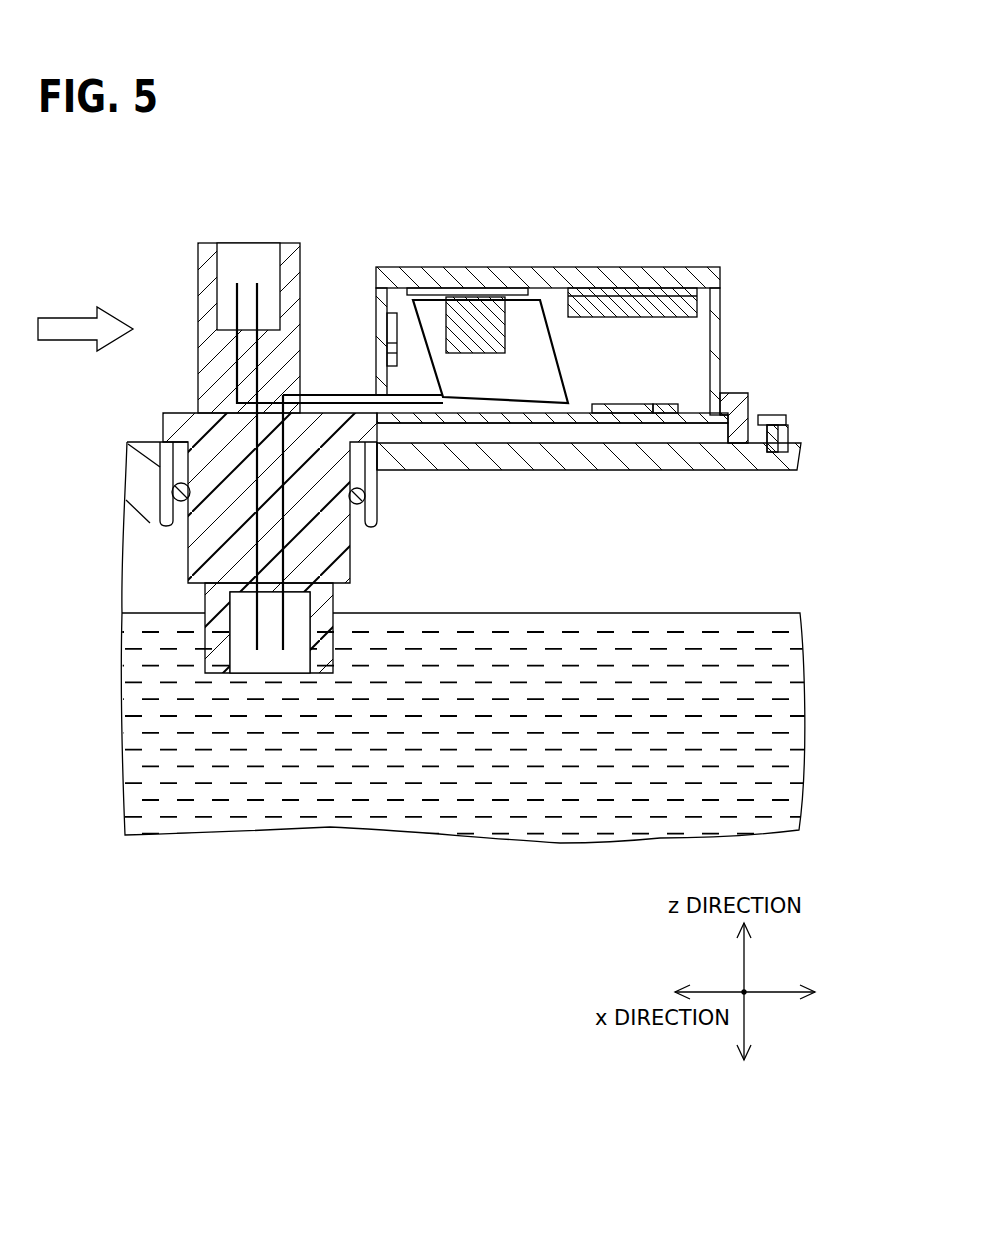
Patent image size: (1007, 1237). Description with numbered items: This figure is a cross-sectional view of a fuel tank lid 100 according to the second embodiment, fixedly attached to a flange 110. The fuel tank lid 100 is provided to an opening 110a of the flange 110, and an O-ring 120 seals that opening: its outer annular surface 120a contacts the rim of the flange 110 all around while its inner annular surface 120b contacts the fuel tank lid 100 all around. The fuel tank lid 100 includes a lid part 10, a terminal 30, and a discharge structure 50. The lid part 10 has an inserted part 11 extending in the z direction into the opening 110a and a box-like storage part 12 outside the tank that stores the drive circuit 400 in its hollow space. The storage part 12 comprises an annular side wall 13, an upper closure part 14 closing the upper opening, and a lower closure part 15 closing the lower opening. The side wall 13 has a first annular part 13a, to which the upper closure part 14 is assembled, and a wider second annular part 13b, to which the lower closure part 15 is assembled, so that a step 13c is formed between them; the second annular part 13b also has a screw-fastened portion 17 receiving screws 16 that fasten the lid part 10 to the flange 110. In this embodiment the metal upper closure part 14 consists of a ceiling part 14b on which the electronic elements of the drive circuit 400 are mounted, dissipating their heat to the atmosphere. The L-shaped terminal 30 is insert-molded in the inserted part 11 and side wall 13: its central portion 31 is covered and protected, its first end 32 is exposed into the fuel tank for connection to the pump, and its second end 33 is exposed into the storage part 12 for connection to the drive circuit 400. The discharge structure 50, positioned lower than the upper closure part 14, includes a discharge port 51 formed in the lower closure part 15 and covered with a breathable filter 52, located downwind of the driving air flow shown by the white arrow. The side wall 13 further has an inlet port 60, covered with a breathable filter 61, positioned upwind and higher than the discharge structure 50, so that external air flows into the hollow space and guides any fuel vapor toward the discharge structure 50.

The lid part 10 is at (283, 166).
The inserted part 11 is at (288, 243).
The storage part 12 is at (380, 262).
The side wall 13 is at (840, 342).
The first annular part 13a is at (722, 372).
The second annular part 13b is at (735, 412).
The step 13c is at (717, 418).
The upper closure part 14 is at (611, 272).
The ceiling part 14b is at (715, 275).
The lower closure part 15 is at (543, 423).
The screws 16 is at (770, 452).
The screw-fastened portion 17 is at (765, 445).
The terminal 30 is at (282, 573).
The central portion 31 is at (283, 536).
The first end 32 is at (283, 633).
The second end 33 is at (442, 380).
The discharge structure 50 is at (653, 440).
The discharge port 51 is at (657, 406).
The breathable filter 52 is at (619, 405).
The inlet port 60 is at (386, 326).
The breathable filter 61 is at (387, 358).
The fuel tank lid 100 is at (765, 177).
The flange 110 is at (792, 458).
The opening 110a is at (370, 464).
The O-ring 120 is at (163, 494).
The outer annular surface 120a is at (373, 498).
The inner annular surface 120b is at (191, 480).
The drive circuit 400 is at (484, 300).